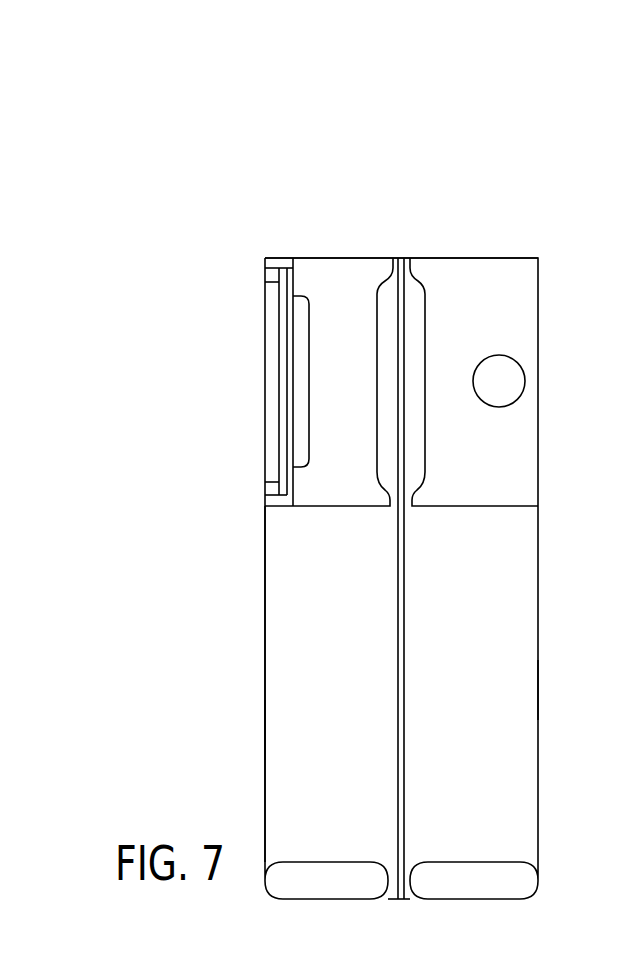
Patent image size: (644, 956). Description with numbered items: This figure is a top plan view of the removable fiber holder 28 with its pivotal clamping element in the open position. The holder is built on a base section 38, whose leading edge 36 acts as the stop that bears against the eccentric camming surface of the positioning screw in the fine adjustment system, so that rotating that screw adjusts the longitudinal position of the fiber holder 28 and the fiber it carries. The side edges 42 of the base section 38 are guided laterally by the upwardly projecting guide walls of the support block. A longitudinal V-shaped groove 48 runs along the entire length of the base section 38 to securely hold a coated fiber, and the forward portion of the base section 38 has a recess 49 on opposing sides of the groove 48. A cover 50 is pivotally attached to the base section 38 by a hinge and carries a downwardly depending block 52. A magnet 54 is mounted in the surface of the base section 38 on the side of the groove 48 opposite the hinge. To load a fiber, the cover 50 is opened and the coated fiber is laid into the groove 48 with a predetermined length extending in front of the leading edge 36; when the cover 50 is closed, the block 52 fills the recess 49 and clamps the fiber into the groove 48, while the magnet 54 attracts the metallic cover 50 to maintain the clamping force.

The removable fiber holder 28 is at (428, 131).
The leading edge 36 is at (497, 257).
The base section 38 is at (308, 640).
The side edges 42 is at (264, 732).
The V-shaped groove 48 is at (402, 258).
The recess 49 is at (385, 283).
The cover 50 is at (272, 303).
The downwardly depending block 52 is at (285, 275).
The magnet 54 is at (507, 380).